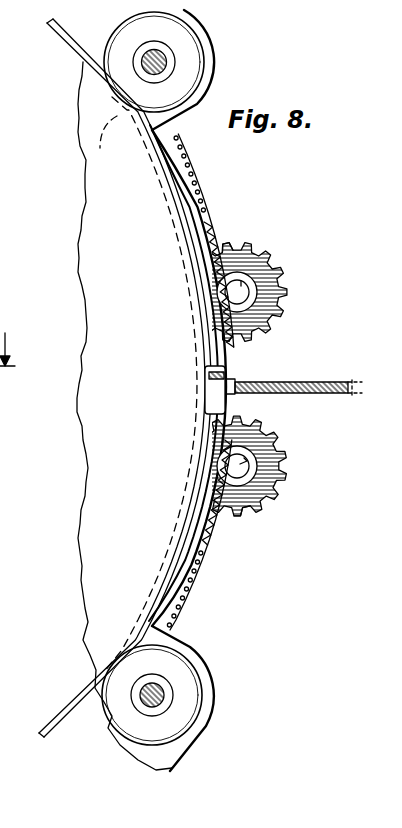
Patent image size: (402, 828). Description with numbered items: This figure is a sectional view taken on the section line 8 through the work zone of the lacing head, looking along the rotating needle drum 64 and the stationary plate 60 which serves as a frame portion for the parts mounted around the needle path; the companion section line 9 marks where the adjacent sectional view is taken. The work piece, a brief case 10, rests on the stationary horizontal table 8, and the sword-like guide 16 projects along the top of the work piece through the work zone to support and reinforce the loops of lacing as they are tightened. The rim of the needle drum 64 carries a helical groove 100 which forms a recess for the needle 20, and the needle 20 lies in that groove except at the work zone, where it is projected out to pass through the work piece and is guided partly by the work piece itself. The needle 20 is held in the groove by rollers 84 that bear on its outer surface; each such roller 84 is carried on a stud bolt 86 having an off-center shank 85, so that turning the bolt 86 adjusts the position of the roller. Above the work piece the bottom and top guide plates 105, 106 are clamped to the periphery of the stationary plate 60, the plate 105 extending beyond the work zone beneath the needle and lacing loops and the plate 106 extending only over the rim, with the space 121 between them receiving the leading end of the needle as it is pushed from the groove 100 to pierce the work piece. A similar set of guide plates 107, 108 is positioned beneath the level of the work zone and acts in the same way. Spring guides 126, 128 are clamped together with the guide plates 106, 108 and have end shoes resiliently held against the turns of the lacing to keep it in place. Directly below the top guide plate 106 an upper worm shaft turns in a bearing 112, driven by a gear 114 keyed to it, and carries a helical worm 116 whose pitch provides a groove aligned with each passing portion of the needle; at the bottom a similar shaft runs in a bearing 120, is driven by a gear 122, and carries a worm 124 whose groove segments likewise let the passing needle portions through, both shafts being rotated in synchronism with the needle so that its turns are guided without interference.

The stationary horizontal table 8 is at (7, 488).
The section line 9— 9 is at (15, 358).
The brief case 10 is at (8, 268).
The sword-like guide 16 is at (207, 365).
The needle 20 is at (70, 42).
The stationary plate 60 is at (207, 425).
The rotating needle drum 64 is at (84, 193).
The rollers 84 is at (190, 33).
The off-center shank 85 is at (170, 63).
The stud bolt 86 is at (147, 53).
The helical groove 100 is at (139, 384).
The bottom guide plate 105 is at (192, 230).
The top guide plate 106 is at (212, 225).
The guide plate 107 is at (200, 508).
The guide plate 108 is at (208, 532).
The bearing 112 is at (258, 277).
The gear 114 is at (257, 244).
The helical worm 116 is at (258, 300).
The bearing 120 is at (258, 470).
The space 121 is at (195, 183).
The gear 122 is at (263, 507).
The worm 124 is at (243, 462).
The spring guide 126 is at (181, 157).
The spring guide 128 is at (188, 597).